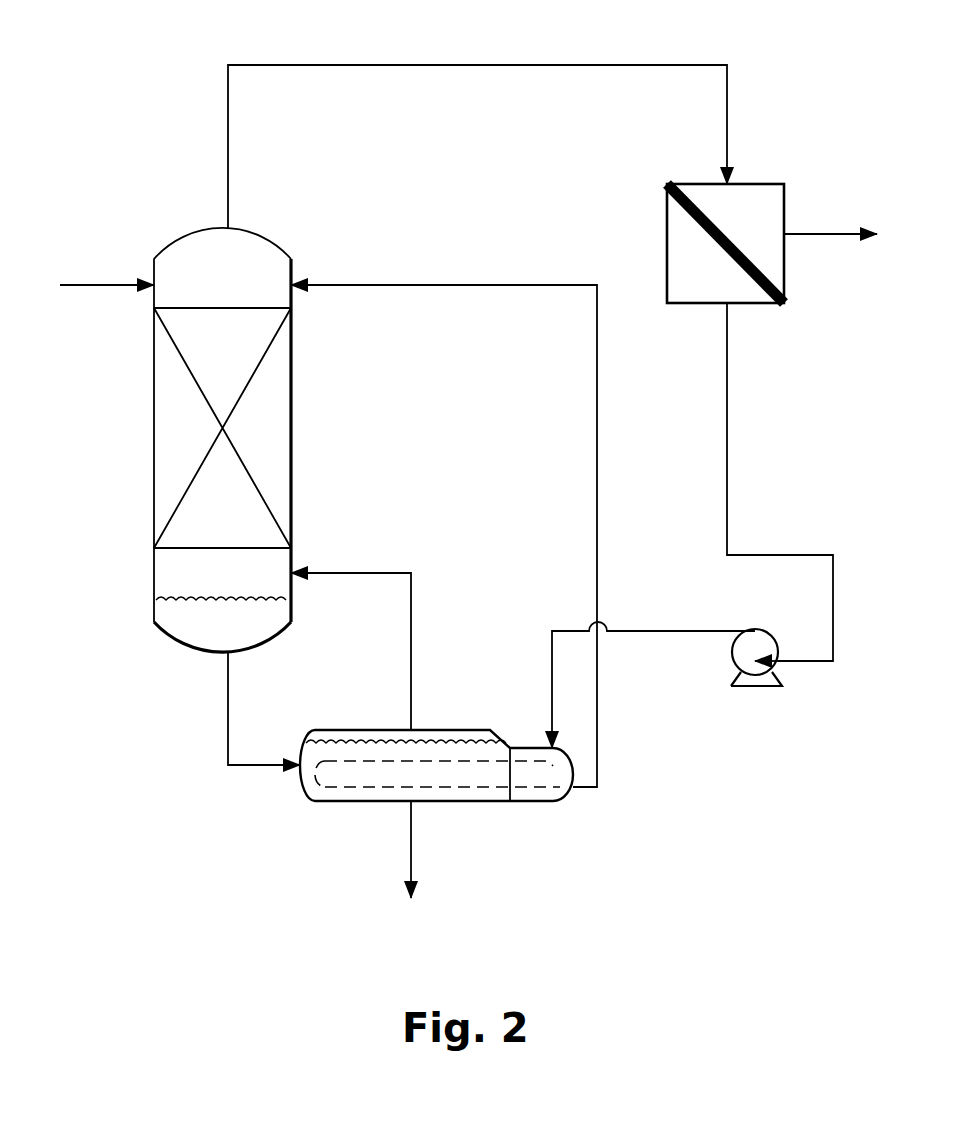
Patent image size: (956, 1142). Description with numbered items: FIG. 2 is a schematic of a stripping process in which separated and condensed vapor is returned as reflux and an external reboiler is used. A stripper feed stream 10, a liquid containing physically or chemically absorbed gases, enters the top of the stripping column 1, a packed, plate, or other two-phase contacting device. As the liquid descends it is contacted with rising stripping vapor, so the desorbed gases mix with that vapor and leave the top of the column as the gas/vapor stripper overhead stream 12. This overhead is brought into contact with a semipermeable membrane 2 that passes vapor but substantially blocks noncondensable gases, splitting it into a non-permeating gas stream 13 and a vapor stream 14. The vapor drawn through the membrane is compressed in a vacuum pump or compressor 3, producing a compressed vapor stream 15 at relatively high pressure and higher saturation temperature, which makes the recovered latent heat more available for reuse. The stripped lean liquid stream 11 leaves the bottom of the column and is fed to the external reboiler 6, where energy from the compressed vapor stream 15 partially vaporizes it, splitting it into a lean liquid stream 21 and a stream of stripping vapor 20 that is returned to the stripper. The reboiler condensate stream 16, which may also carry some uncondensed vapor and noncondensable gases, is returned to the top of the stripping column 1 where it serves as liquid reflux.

The stripping column 1 is at (151, 440).
The semipermeable membrane 2 is at (667, 185).
The vacuum pump or compressor 3 is at (766, 634).
The external reboiler 6 is at (358, 728).
The stripper feed stream 10 is at (92, 283).
The lean liquid stream 11 is at (222, 697).
The stripper overhead stream 12 is at (298, 63).
The non-permeating gas stream 13 is at (820, 231).
The vapor stream 14 is at (735, 413).
The compressed vapor stream 15 is at (639, 626).
The reboiler condensate stream 16 is at (589, 447).
The stripping vapor stream 20 is at (356, 566).
The lean liquid stream 21 is at (420, 852).